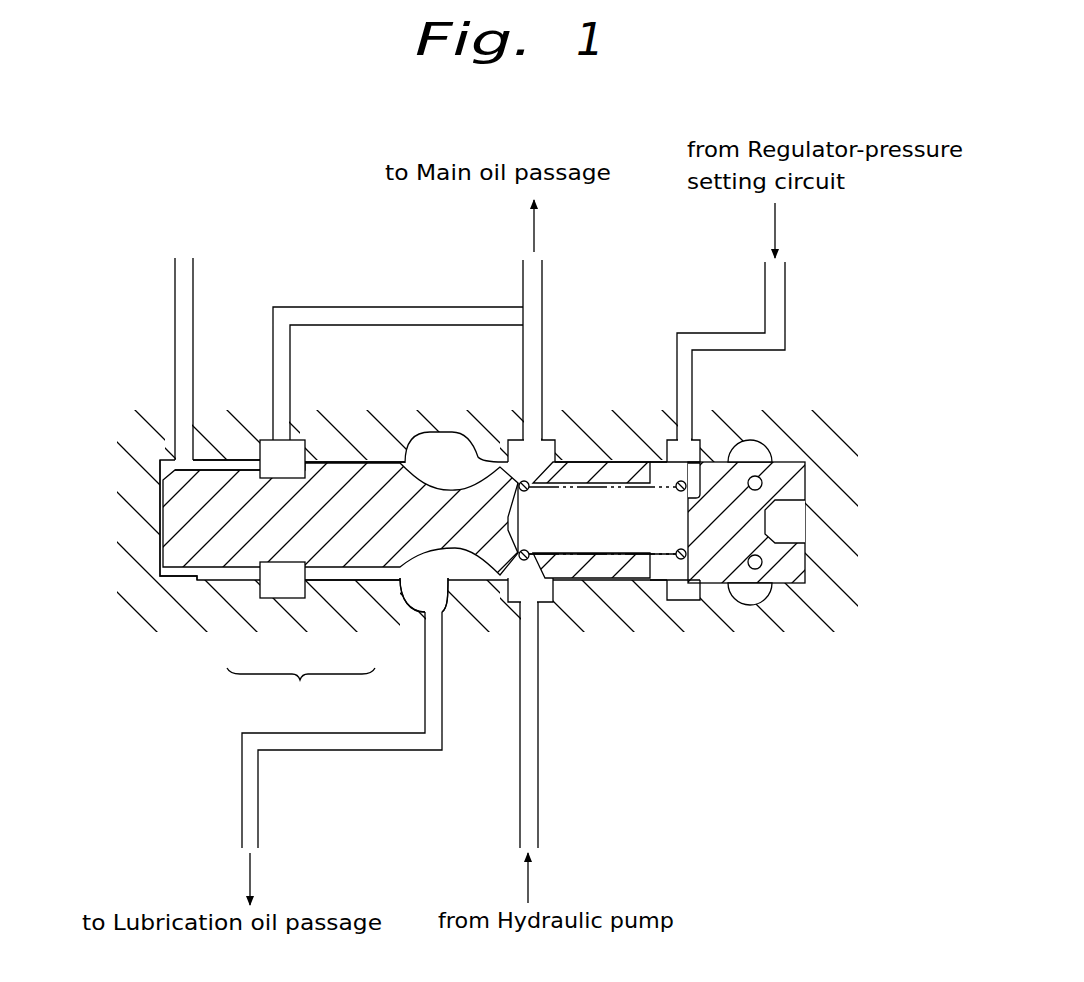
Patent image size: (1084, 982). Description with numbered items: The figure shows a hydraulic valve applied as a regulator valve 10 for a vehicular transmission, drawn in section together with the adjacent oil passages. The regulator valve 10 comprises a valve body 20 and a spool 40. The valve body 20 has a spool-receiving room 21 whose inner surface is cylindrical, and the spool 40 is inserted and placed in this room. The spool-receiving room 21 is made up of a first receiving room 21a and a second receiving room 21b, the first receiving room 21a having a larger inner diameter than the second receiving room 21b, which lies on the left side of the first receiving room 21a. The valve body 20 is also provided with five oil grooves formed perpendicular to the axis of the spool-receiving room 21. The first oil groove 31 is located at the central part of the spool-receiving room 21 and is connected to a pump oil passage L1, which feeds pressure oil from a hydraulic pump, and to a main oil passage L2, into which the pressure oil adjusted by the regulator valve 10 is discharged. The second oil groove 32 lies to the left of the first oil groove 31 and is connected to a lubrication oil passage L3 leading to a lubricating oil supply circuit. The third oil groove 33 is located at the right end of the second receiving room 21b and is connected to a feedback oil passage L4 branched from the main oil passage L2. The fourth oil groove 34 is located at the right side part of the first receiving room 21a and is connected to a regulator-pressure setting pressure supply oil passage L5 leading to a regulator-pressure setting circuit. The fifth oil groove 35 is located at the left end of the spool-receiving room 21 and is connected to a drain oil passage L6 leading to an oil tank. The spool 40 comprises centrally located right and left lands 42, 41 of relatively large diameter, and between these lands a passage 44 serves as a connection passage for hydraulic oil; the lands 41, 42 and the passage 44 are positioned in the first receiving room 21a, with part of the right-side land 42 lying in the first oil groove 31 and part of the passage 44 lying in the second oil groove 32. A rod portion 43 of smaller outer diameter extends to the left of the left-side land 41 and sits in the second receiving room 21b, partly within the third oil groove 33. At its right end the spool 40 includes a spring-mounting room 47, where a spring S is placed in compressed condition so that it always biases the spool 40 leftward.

The regulator valve 10 is at (457, 554).
The valve body 20 is at (651, 654).
The spool-receiving room 21 is at (301, 692).
The first receiving room 21a is at (325, 582).
The second receiving room 21b is at (246, 582).
The first oil groove 31 is at (563, 456).
The second oil groove 32 is at (441, 446).
The third oil groove 33 is at (308, 450).
The fourth oil groove 34 is at (712, 456).
The fifth oil groove 35 is at (186, 582).
The spool 40 is at (452, 486).
The left-side land 41 is at (366, 458).
The right-side land 42 is at (625, 456).
The rod portion 43 is at (215, 458).
The passage 44 is at (452, 585).
The spring-mounting room 47 is at (588, 539).
The spring S is at (674, 557).
The pump oil passage L1 is at (538, 730).
The main oil passage L2 is at (542, 342).
The lubrication oil passage L3 is at (360, 752).
The feedback oil passage L4 is at (370, 312).
The regulator-pressure setting pressure supply oil passage L5 is at (785, 325).
The drain oil passage L6 is at (195, 292).